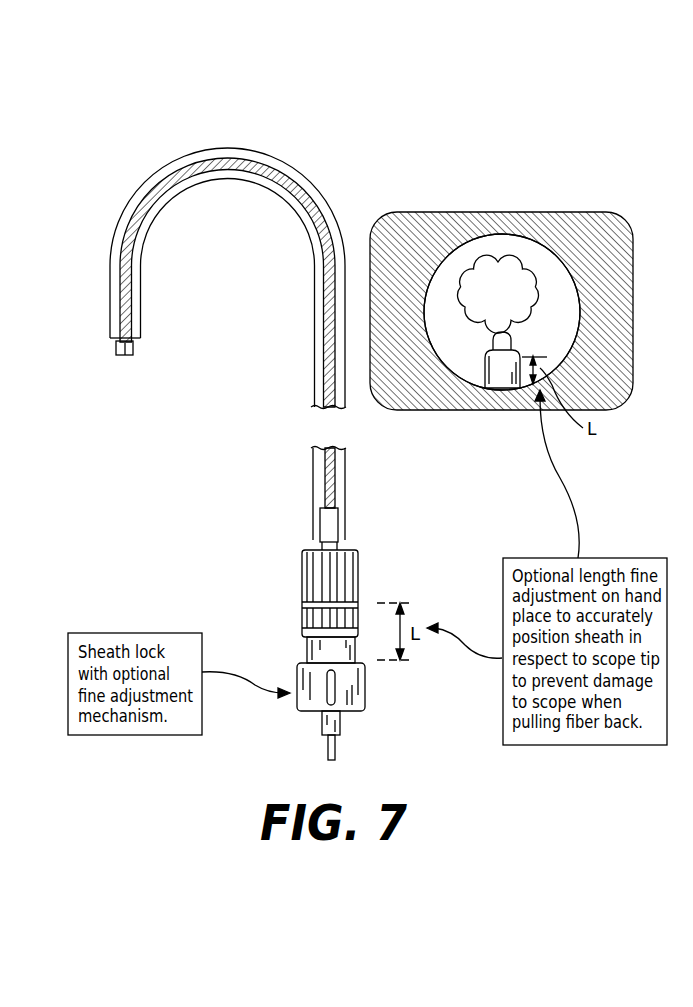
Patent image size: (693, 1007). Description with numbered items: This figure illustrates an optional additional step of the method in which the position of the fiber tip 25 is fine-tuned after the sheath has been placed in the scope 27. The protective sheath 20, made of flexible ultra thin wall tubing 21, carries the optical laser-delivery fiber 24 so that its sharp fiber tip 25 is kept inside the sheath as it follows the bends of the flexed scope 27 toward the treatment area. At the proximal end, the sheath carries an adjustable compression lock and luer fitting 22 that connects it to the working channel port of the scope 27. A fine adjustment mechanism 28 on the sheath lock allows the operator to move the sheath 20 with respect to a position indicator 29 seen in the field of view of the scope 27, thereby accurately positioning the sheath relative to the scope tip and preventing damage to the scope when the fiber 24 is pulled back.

The protective sheath 20 is at (493, 378).
The flexible ultra thin wall tubing 21 is at (117, 353).
The adjustable compression lock and luer fitting 22 is at (270, 563).
The optical laser-delivery fiber 24 is at (130, 320).
The fiber tip 25 is at (125, 355).
The scope 27 is at (131, 198).
The fine adjustment mechanism 28 is at (358, 618).
The position indicator 29 is at (580, 320).